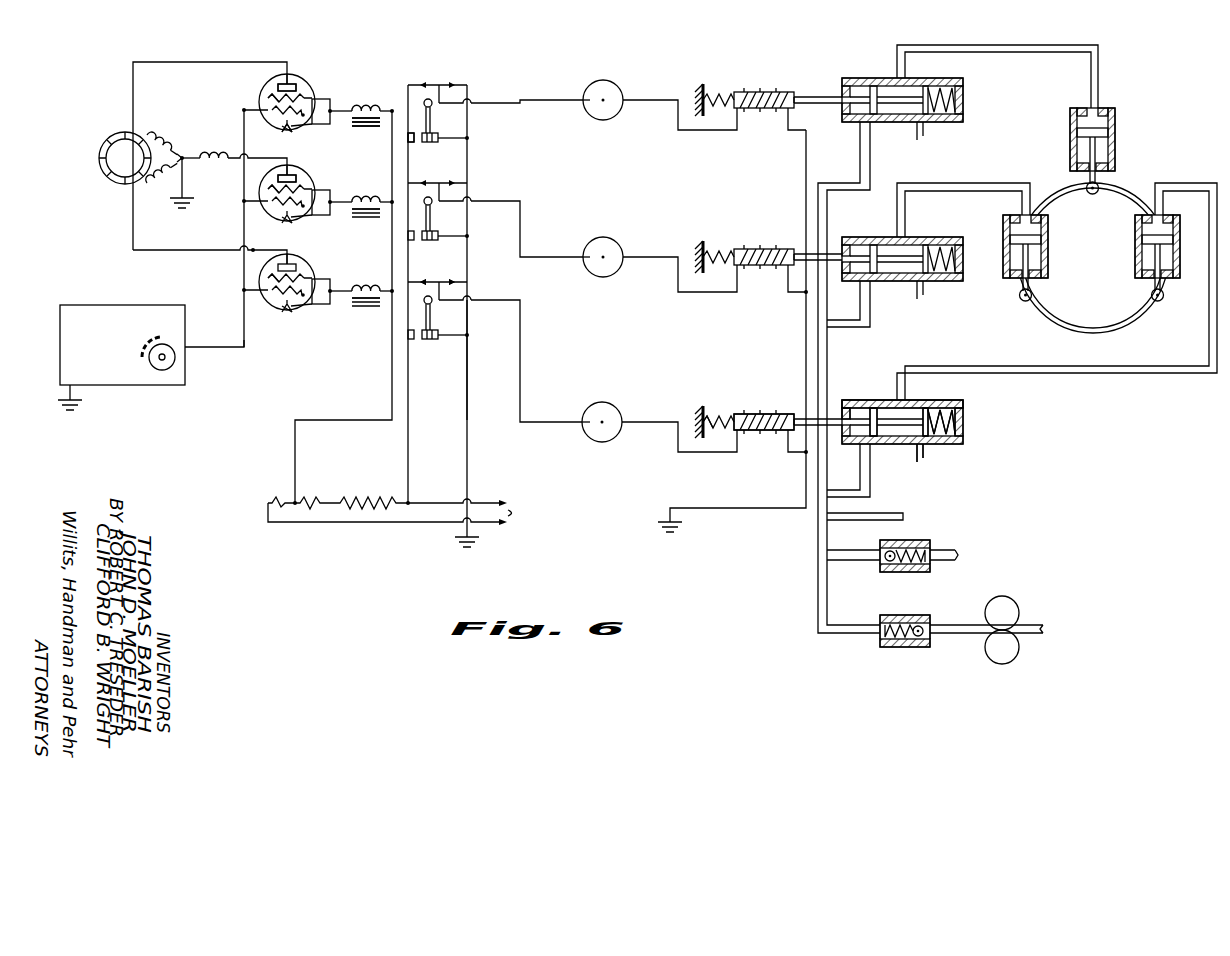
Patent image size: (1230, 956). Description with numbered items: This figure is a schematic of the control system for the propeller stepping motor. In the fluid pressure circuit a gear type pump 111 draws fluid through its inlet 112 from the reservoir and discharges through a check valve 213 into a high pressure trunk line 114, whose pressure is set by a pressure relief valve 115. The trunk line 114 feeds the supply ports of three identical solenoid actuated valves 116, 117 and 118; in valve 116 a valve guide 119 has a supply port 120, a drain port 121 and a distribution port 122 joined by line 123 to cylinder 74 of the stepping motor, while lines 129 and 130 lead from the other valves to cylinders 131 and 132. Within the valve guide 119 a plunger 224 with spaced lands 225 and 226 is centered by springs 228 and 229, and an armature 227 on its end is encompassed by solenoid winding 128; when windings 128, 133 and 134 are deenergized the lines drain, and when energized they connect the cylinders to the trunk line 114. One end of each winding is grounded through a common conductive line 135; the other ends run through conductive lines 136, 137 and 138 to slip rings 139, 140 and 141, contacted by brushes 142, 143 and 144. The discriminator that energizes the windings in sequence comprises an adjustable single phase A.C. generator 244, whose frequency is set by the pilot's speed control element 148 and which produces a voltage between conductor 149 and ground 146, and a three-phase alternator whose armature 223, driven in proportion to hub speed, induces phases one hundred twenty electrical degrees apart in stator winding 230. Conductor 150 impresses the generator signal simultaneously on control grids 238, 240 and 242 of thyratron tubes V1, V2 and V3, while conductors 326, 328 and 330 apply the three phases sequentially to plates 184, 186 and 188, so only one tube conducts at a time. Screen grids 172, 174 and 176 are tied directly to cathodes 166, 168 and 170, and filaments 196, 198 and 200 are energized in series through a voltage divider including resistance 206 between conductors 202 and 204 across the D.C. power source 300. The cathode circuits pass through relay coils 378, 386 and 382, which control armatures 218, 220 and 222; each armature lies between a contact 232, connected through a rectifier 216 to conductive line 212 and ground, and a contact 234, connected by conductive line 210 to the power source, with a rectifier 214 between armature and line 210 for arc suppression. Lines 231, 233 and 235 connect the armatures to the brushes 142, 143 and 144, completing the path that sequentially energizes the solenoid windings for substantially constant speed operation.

The cylinder 74 is at (1136, 283).
The pump 111 is at (1010, 598).
The inlet 112 is at (1045, 636).
The high pressure trunk line 114 is at (818, 608).
The pressure relief valve 115 is at (932, 546).
The solenoid actuated valve 116 is at (978, 398).
The solenoid actuated valve 117 is at (983, 224).
The solenoid actuated valve 118 is at (1013, 86).
The valve guide 119 is at (963, 412).
The supply port 120 is at (868, 446).
The drain port 121 is at (922, 458).
The distribution port 122 is at (896, 400).
The line 123 is at (1062, 373).
The solenoid winding 128 is at (775, 399).
The line 129 is at (1006, 183).
The line 130 is at (1042, 45).
The cylinder 131 is at (1048, 266).
The cylinder 132 is at (1117, 160).
The solenoid winding 133 is at (760, 249).
The solenoid winding 134 is at (760, 92).
The common conductive line 135 is at (790, 510).
The conductive line 136 is at (678, 430).
The conductive line 137 is at (678, 270).
The conductive line 138 is at (678, 110).
The slip ring 139 is at (613, 406).
The slip ring 140 is at (617, 243).
The slip ring 141 is at (617, 85).
The brush 142 is at (590, 410).
The brush 143 is at (590, 246).
The brush 144 is at (590, 90).
The ground 146 is at (96, 407).
The pilot's speed control element 148 is at (161, 366).
The conductor 149 is at (241, 356).
The conductor 150 is at (247, 352).
The cathode 166 is at (320, 128).
The cathode 168 is at (325, 222).
The cathode 170 is at (316, 306).
The screen grid 172 is at (322, 104).
The screen grid 174 is at (328, 190).
The screen grid 176 is at (320, 281).
The plate 184 is at (293, 84).
The plate 186 is at (291, 134).
The plate 188 is at (291, 264).
The filament 196 is at (280, 132).
The filament 198 is at (281, 225).
The filament 200 is at (291, 320).
The conductor 202 is at (432, 496).
The conductor 204 is at (452, 320).
The resistance 206 is at (390, 505).
The conductive line 210 is at (410, 417).
The conductive line 212 is at (466, 411).
The check valve 213 is at (948, 613).
The rectifier 214 is at (421, 281).
The rectifier 216 is at (457, 281).
The armature 218 is at (438, 124).
The armature 220 is at (438, 222).
The armature 222 is at (438, 321).
The armature 223 is at (110, 140).
The plunger 224 is at (918, 424).
The land 225 is at (865, 400).
The land 226 is at (950, 420).
The armature 227 is at (762, 432).
The spring 228 is at (718, 432).
The spring 229 is at (965, 430).
The stator winding 230 is at (170, 140).
The line 231 is at (493, 100).
The contact 232 is at (392, 300).
The line 233 is at (512, 201).
The contact 234 is at (414, 142).
The line 235 is at (522, 356).
The control grid 238 is at (276, 98).
The control grid 240 is at (262, 200).
The control grid 242 is at (275, 290).
The single phase A.C. generator 244 is at (125, 305).
The D.C. power source 300 is at (527, 513).
The conductor 326 is at (213, 53).
The conductor 328 is at (236, 140).
The conductor 330 is at (221, 240).
The relay coil 378 is at (376, 106).
The relay coil 382 is at (365, 286).
The relay coil 386 is at (368, 196).
The thyratron tube V1 is at (293, 98).
The thyratron tube V2 is at (287, 185).
The thyratron tube V3 is at (287, 274).